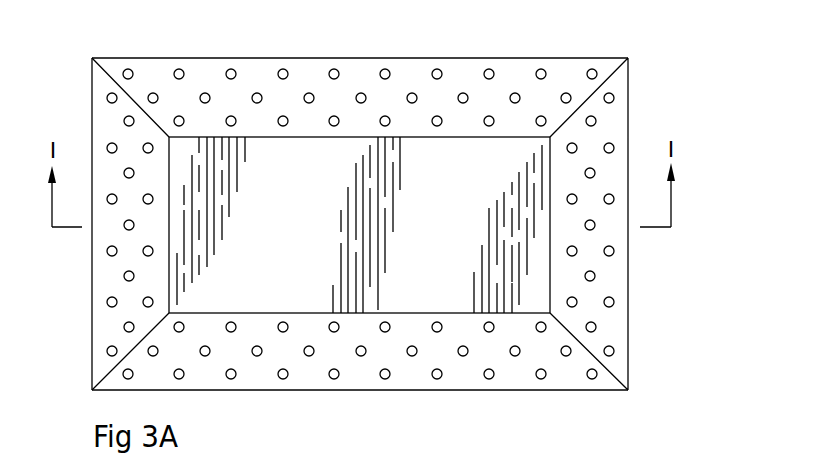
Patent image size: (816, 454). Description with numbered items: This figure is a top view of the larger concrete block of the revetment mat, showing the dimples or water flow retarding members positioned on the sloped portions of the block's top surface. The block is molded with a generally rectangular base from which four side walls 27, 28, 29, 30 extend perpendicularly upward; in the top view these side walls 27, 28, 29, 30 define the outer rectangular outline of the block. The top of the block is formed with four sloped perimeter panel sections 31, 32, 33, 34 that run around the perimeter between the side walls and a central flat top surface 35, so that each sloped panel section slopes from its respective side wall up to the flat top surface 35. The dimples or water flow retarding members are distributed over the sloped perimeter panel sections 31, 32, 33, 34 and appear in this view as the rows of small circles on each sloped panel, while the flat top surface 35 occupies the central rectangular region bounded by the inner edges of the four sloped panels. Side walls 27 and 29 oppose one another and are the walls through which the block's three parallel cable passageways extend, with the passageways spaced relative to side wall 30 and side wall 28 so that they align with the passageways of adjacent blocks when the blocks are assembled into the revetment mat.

The side wall 27 is at (630, 317).
The side wall 28 is at (370, 392).
The side wall 29 is at (90, 268).
The side wall 30 is at (407, 58).
The sloped perimeter panel section 31 is at (610, 268).
The sloped perimeter panel section 32 is at (512, 372).
The sloped perimeter panel section 33 is at (100, 317).
The sloped perimeter panel section 34 is at (309, 72).
The flat top surface 35 is at (305, 284).